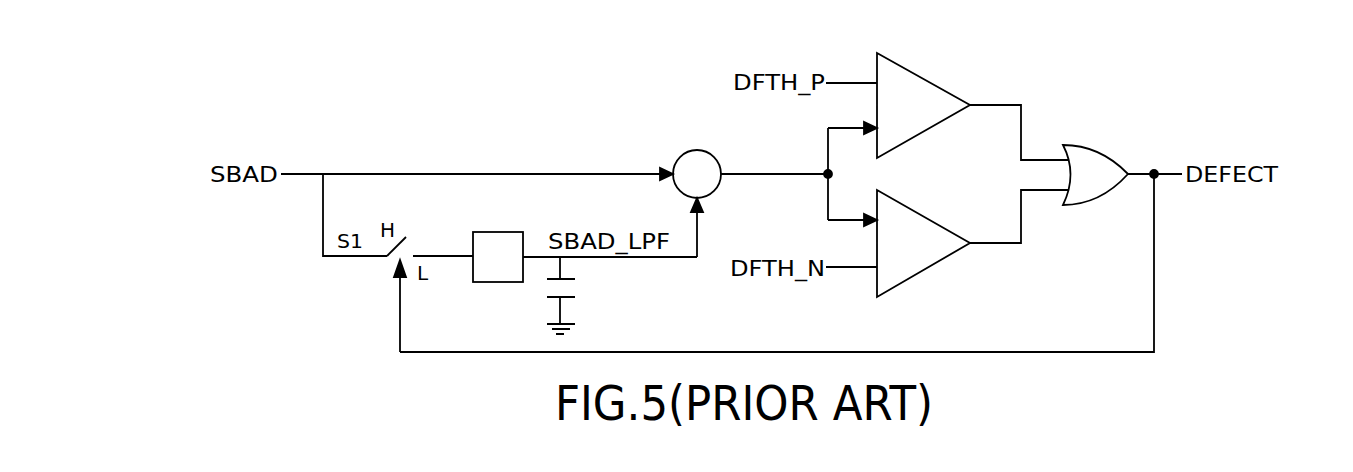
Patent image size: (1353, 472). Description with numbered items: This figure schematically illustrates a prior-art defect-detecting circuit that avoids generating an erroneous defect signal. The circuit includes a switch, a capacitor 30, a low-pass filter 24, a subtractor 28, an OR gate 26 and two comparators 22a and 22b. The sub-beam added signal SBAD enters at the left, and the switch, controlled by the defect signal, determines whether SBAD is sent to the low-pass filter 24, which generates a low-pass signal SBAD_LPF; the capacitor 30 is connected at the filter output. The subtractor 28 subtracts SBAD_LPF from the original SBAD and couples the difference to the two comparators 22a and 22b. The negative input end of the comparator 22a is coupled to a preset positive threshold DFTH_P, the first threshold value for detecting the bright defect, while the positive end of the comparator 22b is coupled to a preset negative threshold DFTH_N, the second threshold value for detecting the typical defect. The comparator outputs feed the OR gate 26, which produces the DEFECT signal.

The comparator 22a is at (920, 90).
The comparator 22b is at (920, 228).
The low-pass filter 24 is at (500, 243).
The OR gate 26 is at (1102, 167).
The subtractor 28 is at (703, 168).
The capacitor 30 is at (575, 287).